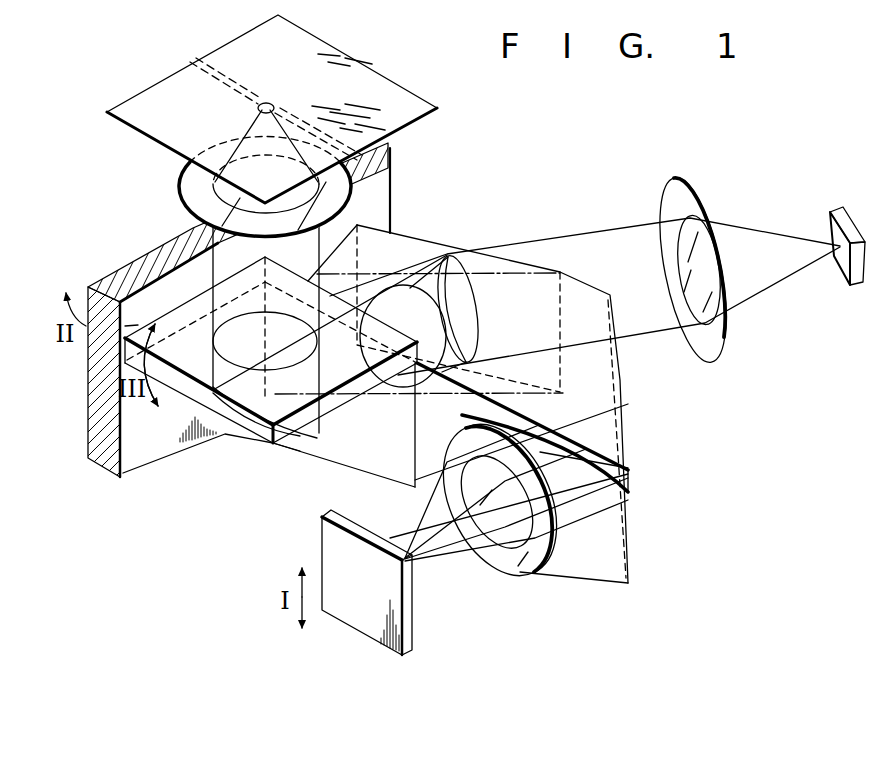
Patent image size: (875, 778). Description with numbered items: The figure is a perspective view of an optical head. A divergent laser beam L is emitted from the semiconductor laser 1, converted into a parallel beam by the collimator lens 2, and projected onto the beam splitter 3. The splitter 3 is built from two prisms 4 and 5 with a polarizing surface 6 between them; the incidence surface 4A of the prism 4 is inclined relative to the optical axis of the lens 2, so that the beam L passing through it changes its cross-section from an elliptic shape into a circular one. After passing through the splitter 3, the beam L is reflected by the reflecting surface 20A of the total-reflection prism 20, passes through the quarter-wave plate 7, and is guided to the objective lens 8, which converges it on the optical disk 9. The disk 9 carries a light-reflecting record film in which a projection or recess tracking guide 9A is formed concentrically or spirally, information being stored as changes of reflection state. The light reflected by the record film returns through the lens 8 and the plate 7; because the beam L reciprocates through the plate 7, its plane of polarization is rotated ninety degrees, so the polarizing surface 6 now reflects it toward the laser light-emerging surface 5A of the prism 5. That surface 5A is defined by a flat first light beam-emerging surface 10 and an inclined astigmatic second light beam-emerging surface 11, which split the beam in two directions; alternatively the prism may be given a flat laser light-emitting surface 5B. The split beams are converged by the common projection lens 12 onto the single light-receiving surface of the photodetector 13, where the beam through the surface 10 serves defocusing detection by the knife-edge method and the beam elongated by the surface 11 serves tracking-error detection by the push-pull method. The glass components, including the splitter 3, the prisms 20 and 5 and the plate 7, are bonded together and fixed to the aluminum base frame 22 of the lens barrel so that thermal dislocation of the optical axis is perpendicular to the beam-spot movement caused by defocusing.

The semiconductor laser 1 is at (833, 208).
The collimator lens 2 is at (682, 190).
The beam splitter 3 is at (452, 244).
The prism 4 is at (396, 243).
The incidence surface 4A is at (510, 287).
The prism 5 is at (602, 362).
The laser light-emerging surface 5A is at (486, 408).
The laser light-emitting surface 5B is at (622, 445).
The polarizing surface 6 is at (366, 283).
The quarter-wave plate 7 is at (182, 404).
The objective lens 8 is at (186, 188).
The optical disk 9 is at (402, 96).
The tracking guide 9A is at (292, 125).
The first light beam-emerging surface 10 is at (622, 550).
The second light beam-emerging surface 11 is at (628, 502).
The projection lens 12 is at (512, 570).
The photodetector 13 is at (348, 618).
The total-reflection prism 20 is at (342, 452).
The reflecting surface 20A is at (288, 452).
The base frame 22 is at (196, 440).
The laser beam L is at (248, 120).